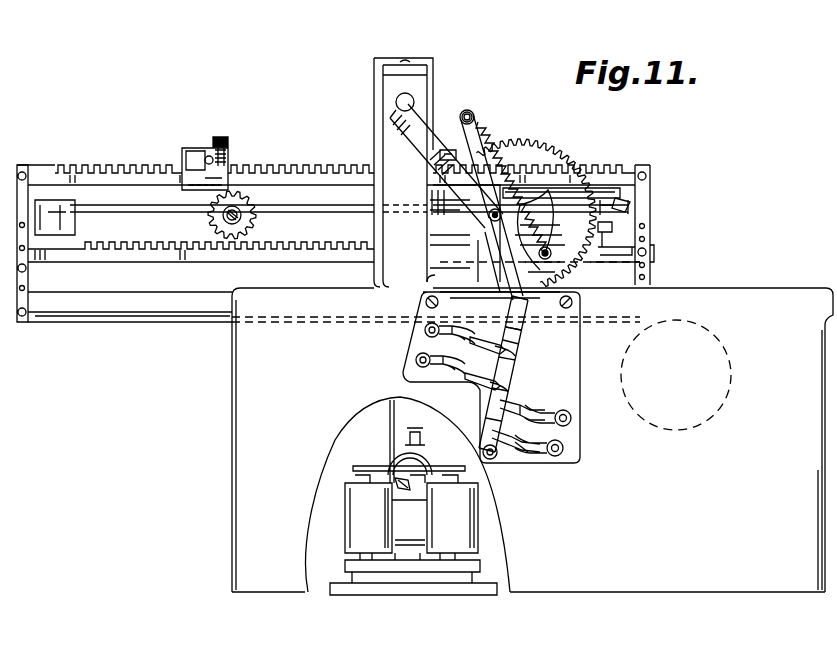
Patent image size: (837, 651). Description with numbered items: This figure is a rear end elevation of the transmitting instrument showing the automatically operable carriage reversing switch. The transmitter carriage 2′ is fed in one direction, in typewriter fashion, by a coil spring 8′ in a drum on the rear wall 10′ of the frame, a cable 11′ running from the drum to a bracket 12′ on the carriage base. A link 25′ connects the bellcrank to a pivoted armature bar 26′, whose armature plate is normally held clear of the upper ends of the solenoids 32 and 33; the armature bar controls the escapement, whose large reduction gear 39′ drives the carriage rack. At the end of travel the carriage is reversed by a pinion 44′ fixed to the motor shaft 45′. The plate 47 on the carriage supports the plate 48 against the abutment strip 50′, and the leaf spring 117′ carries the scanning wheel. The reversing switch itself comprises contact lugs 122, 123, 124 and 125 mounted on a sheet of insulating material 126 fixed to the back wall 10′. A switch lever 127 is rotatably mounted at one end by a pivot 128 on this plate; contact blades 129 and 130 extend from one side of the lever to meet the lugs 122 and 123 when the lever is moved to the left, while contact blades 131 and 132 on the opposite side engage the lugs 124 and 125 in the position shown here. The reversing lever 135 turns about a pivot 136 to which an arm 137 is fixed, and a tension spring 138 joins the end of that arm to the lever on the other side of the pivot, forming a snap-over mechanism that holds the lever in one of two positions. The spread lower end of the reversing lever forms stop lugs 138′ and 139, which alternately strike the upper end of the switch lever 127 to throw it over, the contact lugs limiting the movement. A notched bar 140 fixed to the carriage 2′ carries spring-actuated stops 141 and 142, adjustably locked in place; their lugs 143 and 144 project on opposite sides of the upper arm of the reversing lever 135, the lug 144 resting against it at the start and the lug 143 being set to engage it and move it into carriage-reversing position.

The carriage 2′ is at (662, 225).
The coil spring 8′ is at (676, 387).
The rear wall 10′ is at (519, 440).
The cable 11′ is at (130, 321).
The bracket 12′ is at (29, 257).
The link 25′ is at (409, 441).
The armature bar 26′ is at (407, 489).
The solenoid 32 is at (330, 583).
The solenoid 33 is at (470, 512).
The large gear 39′ is at (536, 203).
The pinion 44′ is at (201, 240).
The shaft 45′ is at (218, 215).
The plate 47 is at (110, 205).
The plate 48 is at (612, 190).
The strip 50′ is at (643, 200).
The leaf spring 117′ is at (554, 208).
The contact lug 122 is at (425, 332).
The contact lug 123 is at (416, 362).
The contact lug 124 is at (550, 408).
The contact lug 125 is at (555, 438).
The sheet of insulating material 126 is at (568, 365).
The switch lever 127 is at (520, 338).
The pivot 128 is at (495, 458).
The contact blade 129 is at (497, 352).
The contact blade 130 is at (472, 378).
The contact blade 131 is at (522, 398).
The contact blade 132 is at (527, 452).
The reversing lever 135 is at (395, 146).
The pivot 136 is at (480, 225).
The arm 137 is at (474, 116).
The tension spring 138 is at (482, 130).
The stop lug 138′ is at (468, 262).
The stop lug 139 is at (594, 237).
The notched bar 140 is at (598, 170).
The stop 141 is at (184, 152).
The stop 142 is at (467, 110).
The lug 143 is at (225, 136).
The lug 144 is at (450, 150).